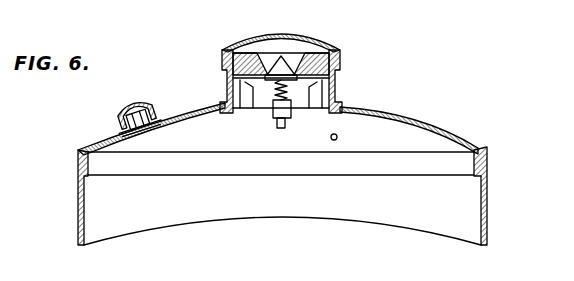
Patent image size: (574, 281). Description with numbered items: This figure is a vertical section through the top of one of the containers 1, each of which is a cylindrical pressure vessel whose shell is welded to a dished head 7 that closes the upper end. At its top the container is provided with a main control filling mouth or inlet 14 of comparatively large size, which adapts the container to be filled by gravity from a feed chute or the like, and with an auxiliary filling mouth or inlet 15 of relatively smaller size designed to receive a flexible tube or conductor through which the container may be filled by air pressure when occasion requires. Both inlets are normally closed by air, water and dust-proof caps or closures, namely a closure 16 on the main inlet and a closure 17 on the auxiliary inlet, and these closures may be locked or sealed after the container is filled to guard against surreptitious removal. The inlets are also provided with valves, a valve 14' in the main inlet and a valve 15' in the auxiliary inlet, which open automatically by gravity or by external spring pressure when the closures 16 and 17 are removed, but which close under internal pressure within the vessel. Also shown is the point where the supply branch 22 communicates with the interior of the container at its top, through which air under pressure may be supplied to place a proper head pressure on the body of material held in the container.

The container 1 is at (487, 188).
The dished head 7 is at (428, 127).
The main control filling mouth or inlet 14 is at (305, 89).
The valve 14' is at (306, 55).
The auxiliary filling mouth or inlet 15 is at (113, 130).
The valve 15' is at (149, 105).
The cap or closure 16 is at (303, 60).
The cap or closure 17 is at (128, 108).
The supply branch 22 is at (338, 134).